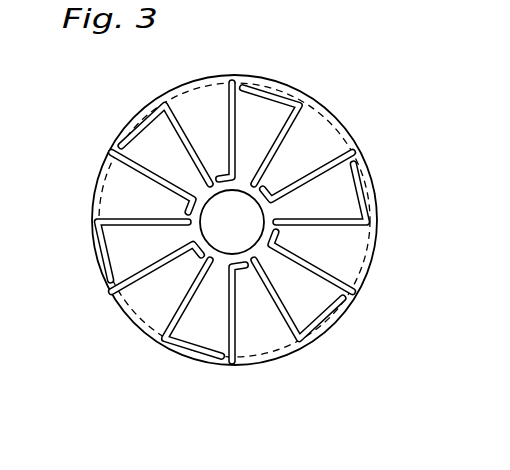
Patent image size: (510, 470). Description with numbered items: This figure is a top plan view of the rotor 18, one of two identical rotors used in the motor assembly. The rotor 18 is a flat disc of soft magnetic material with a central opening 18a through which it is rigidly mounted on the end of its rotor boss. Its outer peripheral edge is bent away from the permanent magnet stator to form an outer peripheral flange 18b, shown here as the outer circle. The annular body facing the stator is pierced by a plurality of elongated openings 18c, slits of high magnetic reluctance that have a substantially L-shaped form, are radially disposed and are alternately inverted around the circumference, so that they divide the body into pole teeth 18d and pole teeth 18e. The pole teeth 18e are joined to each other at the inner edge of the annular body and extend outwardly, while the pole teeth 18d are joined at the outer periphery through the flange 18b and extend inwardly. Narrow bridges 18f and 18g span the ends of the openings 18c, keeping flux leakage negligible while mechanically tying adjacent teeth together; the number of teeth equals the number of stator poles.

The rotor 18 is at (216, 252).
The central opening 18a is at (218, 226).
The outer peripheral flange 18b is at (158, 334).
The elongated openings 18c is at (287, 303).
The pole teeth 18d is at (117, 188).
The pole teeth 18e is at (123, 237).
The bridge 18f is at (290, 342).
The bridge 18g is at (232, 348).